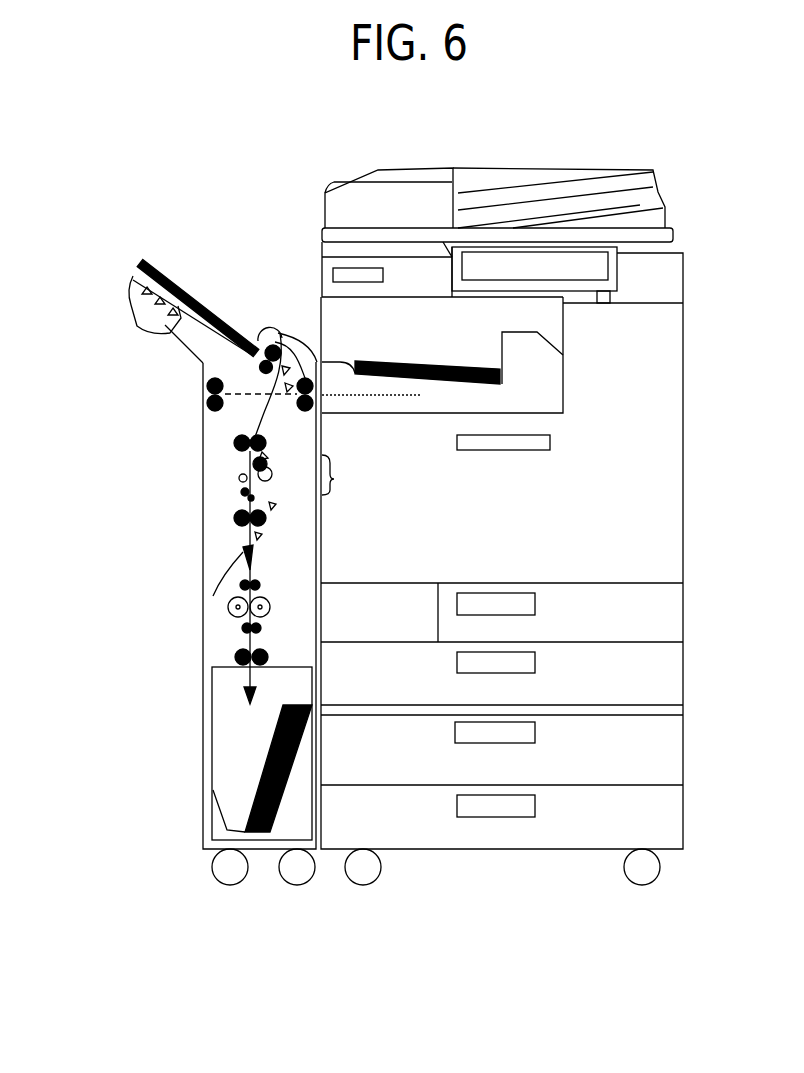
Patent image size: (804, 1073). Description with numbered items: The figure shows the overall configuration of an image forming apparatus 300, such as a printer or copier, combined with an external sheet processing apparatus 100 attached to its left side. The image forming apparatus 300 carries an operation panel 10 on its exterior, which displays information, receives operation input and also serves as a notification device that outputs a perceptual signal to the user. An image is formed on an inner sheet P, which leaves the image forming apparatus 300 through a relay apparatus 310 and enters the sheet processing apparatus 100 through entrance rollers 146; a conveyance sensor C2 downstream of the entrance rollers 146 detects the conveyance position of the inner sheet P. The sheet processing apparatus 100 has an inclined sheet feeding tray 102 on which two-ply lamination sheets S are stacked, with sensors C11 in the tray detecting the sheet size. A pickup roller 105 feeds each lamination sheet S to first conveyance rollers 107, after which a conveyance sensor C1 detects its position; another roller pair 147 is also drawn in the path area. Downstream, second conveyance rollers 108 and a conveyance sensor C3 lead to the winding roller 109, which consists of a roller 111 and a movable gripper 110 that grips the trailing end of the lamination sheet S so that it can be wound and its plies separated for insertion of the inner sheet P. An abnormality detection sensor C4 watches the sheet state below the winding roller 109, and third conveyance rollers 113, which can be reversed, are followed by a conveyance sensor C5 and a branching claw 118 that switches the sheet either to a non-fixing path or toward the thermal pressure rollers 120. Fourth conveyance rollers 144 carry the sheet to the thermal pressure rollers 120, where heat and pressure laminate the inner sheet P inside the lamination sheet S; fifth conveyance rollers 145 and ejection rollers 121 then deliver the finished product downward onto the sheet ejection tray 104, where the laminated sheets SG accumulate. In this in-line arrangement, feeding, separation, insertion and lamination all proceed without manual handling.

The operation panel 10 is at (597, 268).
The image forming apparatus 300 is at (664, 472).
The relay apparatus 310 is at (503, 352).
The inner sheet P is at (397, 396).
The sheet processing apparatus 100 is at (175, 240).
The sheet feeding tray 102 is at (128, 273).
The lamination sheet S is at (172, 287).
The sensors C11 is at (150, 318).
The pickup roller 105 is at (262, 342).
The first conveyance rollers 107 is at (282, 340).
The conveyance sensor C1 is at (292, 358).
The conveyance sensor C2 is at (330, 363).
The conveyance roller pair 147 is at (207, 386).
The entrance rollers 146 is at (326, 414).
The second conveyance rollers 108 is at (235, 443).
The conveyance sensor C3 is at (263, 455).
The gripper 110 is at (268, 466).
The roller 111 is at (273, 481).
The winding roller 109 is at (347, 475).
The third conveyance rollers 113 is at (237, 522).
The abnormality detection sensor C4 is at (273, 508).
The conveyance sensor C5 is at (259, 538).
The branching claw 118 is at (240, 558).
The fourth conveyance rollers 144 is at (261, 587).
The thermal pressure rollers 120 is at (228, 608).
The fifth conveyance rollers 145 is at (262, 629).
The ejection rollers 121 is at (234, 657).
The sheet ejection tray 104 is at (322, 752).
The laminated sheets SG is at (263, 777).